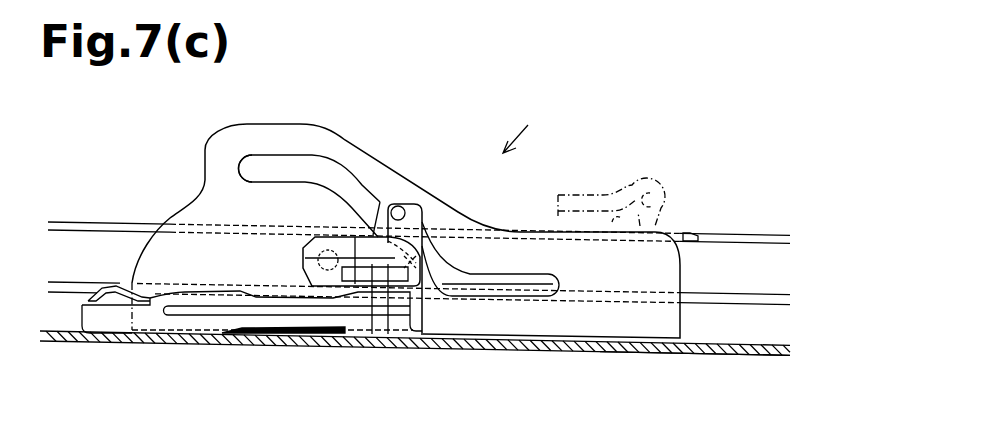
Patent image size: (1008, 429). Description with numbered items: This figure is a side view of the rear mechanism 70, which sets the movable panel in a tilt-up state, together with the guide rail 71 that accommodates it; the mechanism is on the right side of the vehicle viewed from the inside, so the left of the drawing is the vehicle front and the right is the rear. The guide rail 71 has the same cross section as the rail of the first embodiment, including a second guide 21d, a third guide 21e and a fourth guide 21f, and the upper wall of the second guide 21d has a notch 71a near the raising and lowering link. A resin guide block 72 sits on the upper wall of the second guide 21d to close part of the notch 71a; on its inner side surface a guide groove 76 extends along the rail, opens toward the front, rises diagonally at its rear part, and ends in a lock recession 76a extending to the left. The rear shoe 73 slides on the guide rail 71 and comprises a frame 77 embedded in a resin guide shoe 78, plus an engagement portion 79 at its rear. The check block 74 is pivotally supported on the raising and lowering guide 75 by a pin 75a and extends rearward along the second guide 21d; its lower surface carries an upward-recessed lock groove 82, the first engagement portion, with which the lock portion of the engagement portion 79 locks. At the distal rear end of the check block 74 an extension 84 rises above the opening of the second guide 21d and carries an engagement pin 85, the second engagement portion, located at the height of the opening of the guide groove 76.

The rear mechanism 70 is at (532, 129).
The guide rail 71 is at (688, 353).
The notch 71a is at (685, 238).
The guide block 72 is at (640, 172).
The rear shoe 73 is at (102, 324).
The check block 74 is at (307, 243).
The raising and lowering guide 75 is at (424, 188).
The pin 75a is at (335, 225).
The guide groove 76 is at (617, 233).
The lock recession 76a is at (645, 183).
The frame 77 is at (427, 296).
The guide shoe 78 is at (380, 318).
The engagement portion 79 is at (425, 250).
The lock groove 82 is at (385, 284).
The extension 84 is at (418, 204).
The engagement pin 85 is at (375, 208).
The third guide 21e is at (742, 330).
The fourth guide 21f is at (744, 260).
The second guide 21d is at (419, 293).